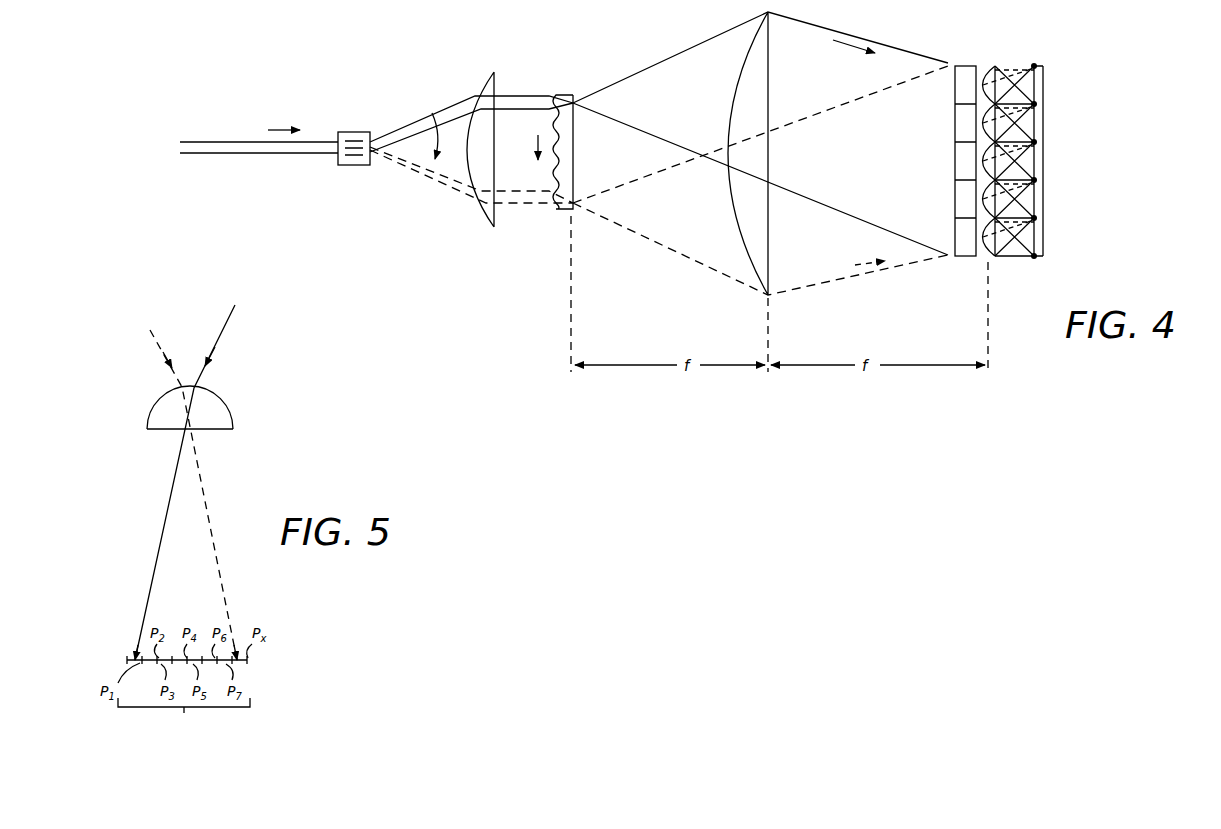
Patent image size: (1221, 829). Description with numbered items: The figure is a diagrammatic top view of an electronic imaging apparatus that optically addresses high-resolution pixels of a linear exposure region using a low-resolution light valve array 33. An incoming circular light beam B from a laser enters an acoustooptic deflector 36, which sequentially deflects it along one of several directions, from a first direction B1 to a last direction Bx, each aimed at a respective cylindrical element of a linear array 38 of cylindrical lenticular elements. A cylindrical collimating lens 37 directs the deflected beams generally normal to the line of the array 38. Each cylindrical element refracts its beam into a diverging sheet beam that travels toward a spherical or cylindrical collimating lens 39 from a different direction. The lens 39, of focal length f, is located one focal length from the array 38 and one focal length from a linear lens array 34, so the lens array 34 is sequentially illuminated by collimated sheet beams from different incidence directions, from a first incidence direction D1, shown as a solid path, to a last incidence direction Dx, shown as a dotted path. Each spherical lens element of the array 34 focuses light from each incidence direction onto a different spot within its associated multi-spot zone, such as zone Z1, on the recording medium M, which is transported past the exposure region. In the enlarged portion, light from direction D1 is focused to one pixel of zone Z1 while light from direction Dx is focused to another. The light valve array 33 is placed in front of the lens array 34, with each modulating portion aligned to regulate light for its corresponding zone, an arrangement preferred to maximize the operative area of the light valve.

In FIG. 4, the low-resolution light valve array 33 is at (966, 60).
In FIG. 4, the linear lens array 34 is at (989, 68).
In FIG. 4, the acoustooptic deflector 36 is at (362, 128).
In FIG. 4, the collimating lens 37 is at (494, 82).
In FIG. 4, the linear array of cylindrical lenticular elements 38 is at (576, 148).
In FIG. 4, the collimating lens 39 is at (742, 72).
In FIG. 4, the incoming circular light beam B is at (182, 146).
In FIG. 4, the first deflected beam direction B1 is at (416, 126).
In FIG. 4, the last deflected beam direction Bx is at (413, 176).
In FIG. 4, the first incidence direction D1 is at (854, 56).
In FIG. 5, the first incidence direction D1 is at (195, 482).
In FIG. 4, the last incidence direction Dx is at (856, 259).
In FIG. 5, the last incidence direction Dx is at (190, 482).
In FIG. 4, the recording medium M is at (1042, 68).
In FIG. 5, the multi-spot zone Z1 is at (184, 700).